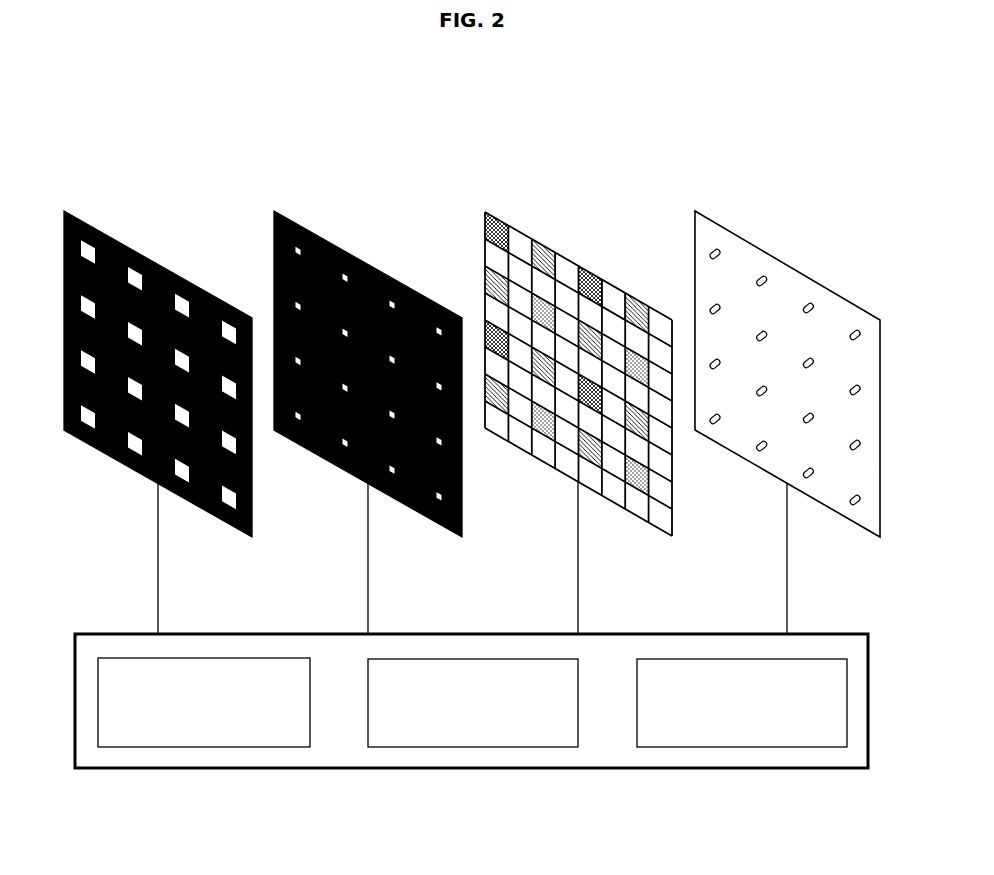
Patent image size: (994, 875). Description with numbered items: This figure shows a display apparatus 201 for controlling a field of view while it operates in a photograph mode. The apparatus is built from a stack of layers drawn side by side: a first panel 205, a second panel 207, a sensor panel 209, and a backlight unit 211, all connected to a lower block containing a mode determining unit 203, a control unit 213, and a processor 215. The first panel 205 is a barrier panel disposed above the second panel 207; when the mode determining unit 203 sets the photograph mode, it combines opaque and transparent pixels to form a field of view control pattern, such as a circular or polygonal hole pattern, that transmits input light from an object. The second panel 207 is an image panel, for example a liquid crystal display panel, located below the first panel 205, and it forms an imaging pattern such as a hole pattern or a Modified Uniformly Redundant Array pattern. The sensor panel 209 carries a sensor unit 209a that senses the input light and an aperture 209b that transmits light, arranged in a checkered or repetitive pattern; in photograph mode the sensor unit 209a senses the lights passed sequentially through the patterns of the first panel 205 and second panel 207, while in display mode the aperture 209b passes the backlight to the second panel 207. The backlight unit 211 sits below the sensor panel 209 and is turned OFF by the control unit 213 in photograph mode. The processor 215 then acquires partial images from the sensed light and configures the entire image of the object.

The display apparatus 201 is at (495, 93).
The mode determining unit 203 is at (203, 748).
The first panel 205 is at (155, 261).
The second panel 207 is at (365, 261).
The sensor panel 209 is at (536, 393).
The sensor unit 209a is at (486, 223).
The aperture 209b is at (614, 292).
The backlight unit 211 is at (785, 261).
The control unit 213 is at (472, 748).
The processor 215 is at (740, 748).